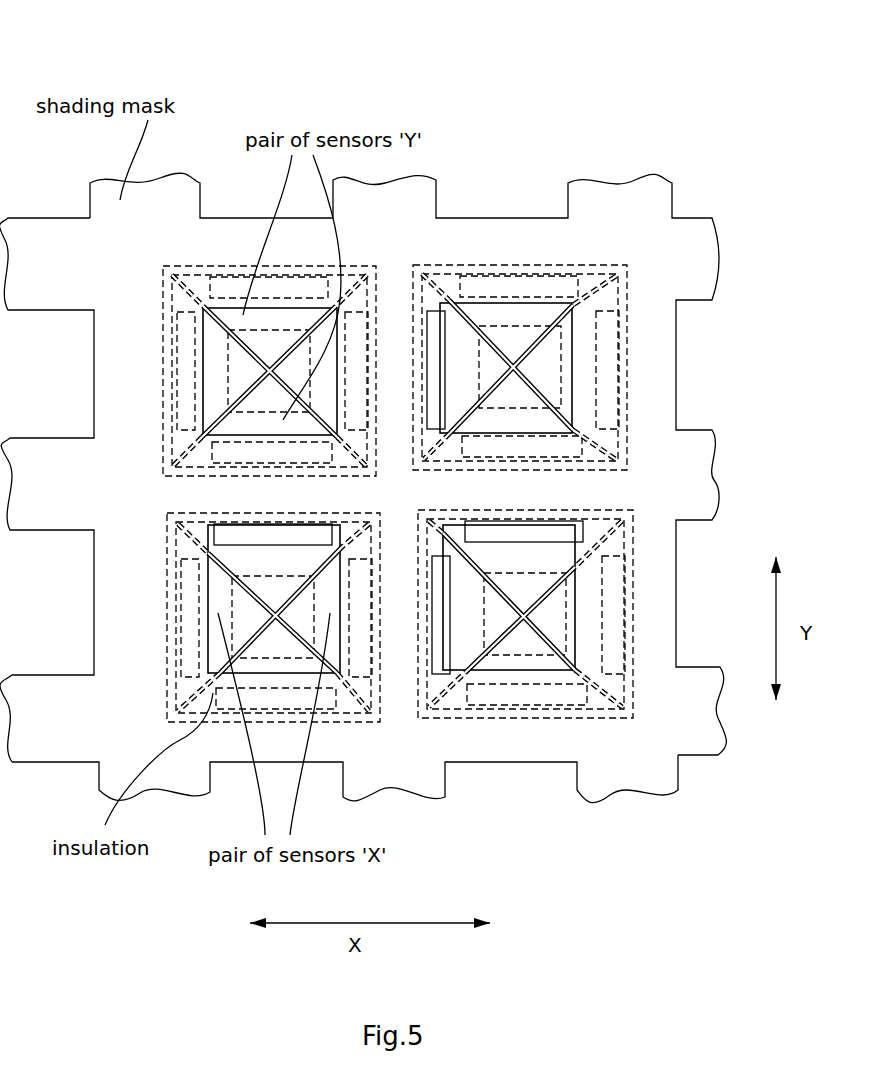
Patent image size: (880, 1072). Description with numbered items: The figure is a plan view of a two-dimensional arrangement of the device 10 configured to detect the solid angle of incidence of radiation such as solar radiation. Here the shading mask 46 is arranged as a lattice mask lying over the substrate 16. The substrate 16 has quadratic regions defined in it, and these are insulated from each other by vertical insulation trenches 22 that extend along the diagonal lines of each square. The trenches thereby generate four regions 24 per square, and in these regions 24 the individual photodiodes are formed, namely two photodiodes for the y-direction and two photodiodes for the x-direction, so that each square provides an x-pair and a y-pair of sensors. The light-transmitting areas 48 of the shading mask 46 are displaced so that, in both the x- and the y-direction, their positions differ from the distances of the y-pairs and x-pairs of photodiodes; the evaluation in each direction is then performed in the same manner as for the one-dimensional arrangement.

The device 10 is at (478, 419).
The shading mask 46 is at (403, 521).
The light-transmitting areas 48 is at (492, 247).
The vertical insulation trenches 22 is at (606, 630).
The regions 24 is at (655, 628).
The substrate 16 is at (553, 822).